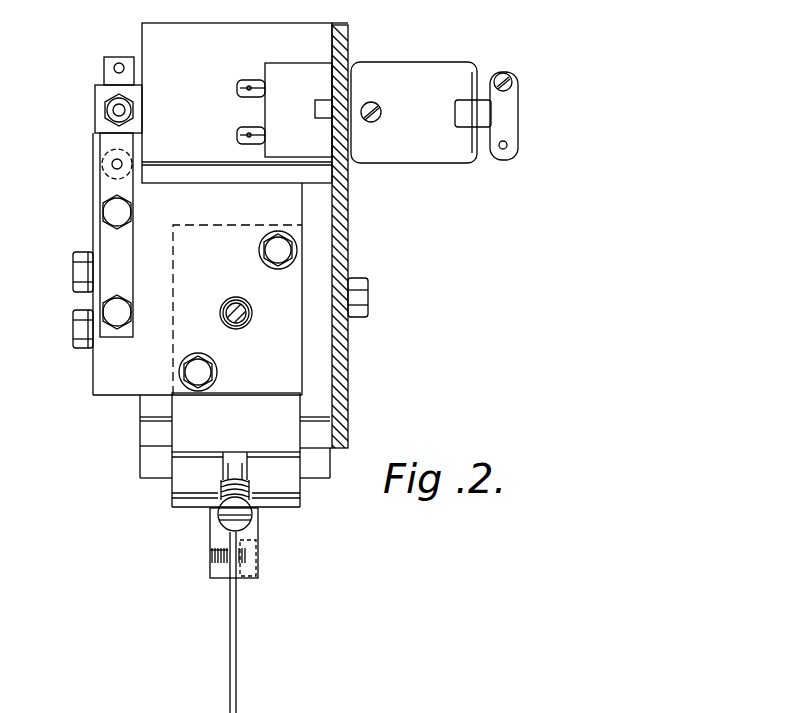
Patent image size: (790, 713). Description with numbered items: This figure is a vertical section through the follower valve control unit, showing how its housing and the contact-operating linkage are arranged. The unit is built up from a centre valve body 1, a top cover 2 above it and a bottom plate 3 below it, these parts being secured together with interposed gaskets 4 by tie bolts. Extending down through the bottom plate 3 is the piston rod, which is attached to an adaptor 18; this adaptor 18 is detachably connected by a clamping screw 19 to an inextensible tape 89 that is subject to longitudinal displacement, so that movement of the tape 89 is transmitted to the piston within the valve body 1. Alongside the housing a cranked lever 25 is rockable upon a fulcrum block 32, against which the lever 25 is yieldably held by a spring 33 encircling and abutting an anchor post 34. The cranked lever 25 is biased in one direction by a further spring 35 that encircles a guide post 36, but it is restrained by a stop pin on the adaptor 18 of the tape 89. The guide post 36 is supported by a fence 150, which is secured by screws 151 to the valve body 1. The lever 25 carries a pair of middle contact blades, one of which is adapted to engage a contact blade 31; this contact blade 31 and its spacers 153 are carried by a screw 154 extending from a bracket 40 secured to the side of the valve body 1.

The centre valve body 1 is at (340, 383).
The top cover 2 is at (148, 40).
The bottom plate 3 is at (150, 432).
The gaskets 4 is at (213, 166).
The adaptor 18 is at (223, 565).
The clamping screw 19 is at (251, 583).
The cranked lever 25 is at (236, 450).
The contact blade 31 is at (111, 145).
The fulcrum block 32 is at (148, 460).
The spring 33 is at (222, 494).
The anchor post 34 is at (244, 523).
The spring 35 is at (238, 330).
The guide post 36 is at (236, 300).
The bracket 40 is at (133, 170).
The tape 89 is at (228, 699).
The fence 150 is at (348, 362).
The screws 151 is at (364, 297).
The spacers 153 is at (95, 115).
The screw 154 is at (108, 100).